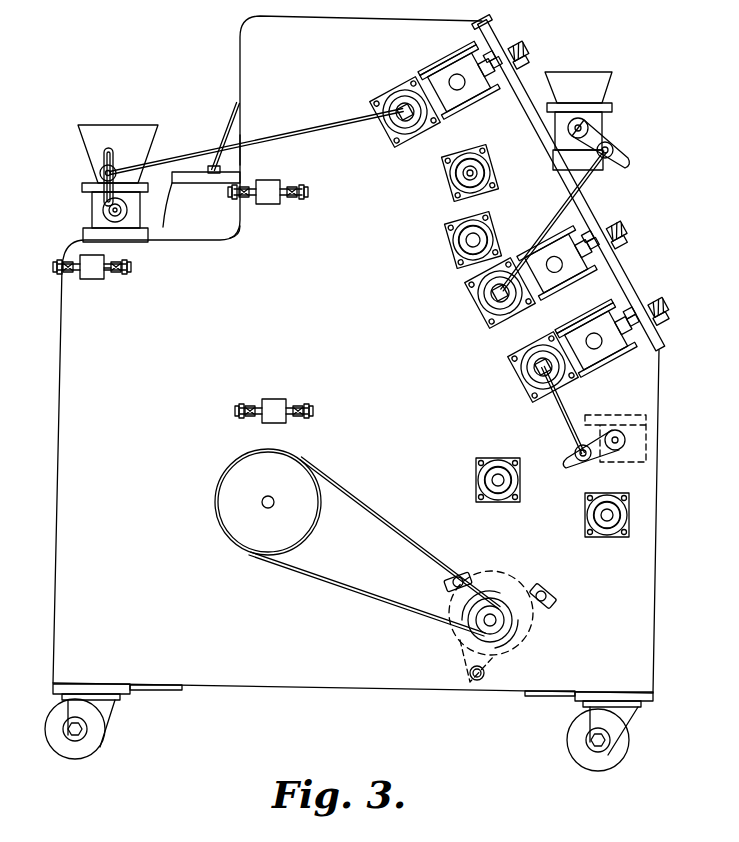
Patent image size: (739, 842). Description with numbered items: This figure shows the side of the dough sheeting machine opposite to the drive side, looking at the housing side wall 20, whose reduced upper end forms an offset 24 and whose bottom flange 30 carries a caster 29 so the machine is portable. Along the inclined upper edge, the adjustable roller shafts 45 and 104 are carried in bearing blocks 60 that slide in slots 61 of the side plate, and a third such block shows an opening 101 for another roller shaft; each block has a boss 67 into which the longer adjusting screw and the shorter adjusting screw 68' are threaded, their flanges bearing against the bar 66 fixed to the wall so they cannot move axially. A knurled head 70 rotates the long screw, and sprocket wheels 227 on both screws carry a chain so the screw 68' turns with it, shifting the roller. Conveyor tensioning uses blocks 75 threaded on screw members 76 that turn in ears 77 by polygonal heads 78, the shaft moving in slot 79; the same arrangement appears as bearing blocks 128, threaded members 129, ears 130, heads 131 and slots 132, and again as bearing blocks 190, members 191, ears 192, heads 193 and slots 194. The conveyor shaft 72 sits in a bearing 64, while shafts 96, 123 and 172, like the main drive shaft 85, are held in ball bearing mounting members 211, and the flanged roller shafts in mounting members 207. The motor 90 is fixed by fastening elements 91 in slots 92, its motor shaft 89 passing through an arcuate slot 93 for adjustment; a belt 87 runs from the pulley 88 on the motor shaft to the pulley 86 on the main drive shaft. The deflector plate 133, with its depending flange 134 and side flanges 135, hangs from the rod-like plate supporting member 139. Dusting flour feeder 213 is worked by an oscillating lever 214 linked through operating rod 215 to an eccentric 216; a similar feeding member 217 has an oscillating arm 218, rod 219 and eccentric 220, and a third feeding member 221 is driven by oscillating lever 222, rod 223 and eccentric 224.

The side wall 20 is at (62, 510).
The offset 24 is at (190, 246).
The caster 29 is at (100, 735).
The bottom flange 30 is at (150, 692).
The shaft 45 is at (443, 78).
The bearing block 60 is at (470, 102).
The slot 61 is at (473, 46).
The bearing 64 is at (490, 162).
The bar 66 is at (615, 298).
The boss 67 is at (480, 72).
The adjusting screw 68' is at (589, 181).
The knurled head 70 is at (518, 50).
The shaft 72 is at (466, 180).
The block 75 is at (268, 181).
The screw-threaded member 76 is at (284, 205).
The ear 77 is at (297, 183).
The polygonal head 78 is at (307, 192).
The slot 79 is at (247, 181).
The main drive shaft 85 is at (276, 502).
The pulley 86 is at (240, 536).
The belt 87 is at (382, 580).
The pulley 88 is at (505, 655).
The motor shaft 89 is at (468, 655).
The motor 90 is at (512, 570).
The fastening element 91 is at (462, 578).
The slot 92 is at (478, 580).
The arcuate slot 93 is at (520, 620).
The shaft 96 is at (492, 482).
The motor shaft opening 101 is at (597, 347).
The shaft 104 is at (548, 258).
The shaft 123 is at (462, 245).
The bearing block 128 is at (96, 280).
The screw-threaded member 129 is at (77, 280).
The ear 130 is at (57, 262).
The head 131 is at (55, 272).
The slot 132 is at (113, 278).
The deflector plate 133 is at (240, 140).
The depending flange 134 is at (174, 209).
The side flange 135 is at (198, 184).
The rod-like plate supporting member 139 is at (232, 108).
The shaft 172 is at (606, 522).
The bearing block 190 is at (276, 399).
The screw-threaded member 191 is at (252, 418).
The ear 192 is at (241, 404).
The head 193 is at (235, 410).
The slot 194 is at (296, 418).
The ball bearing mounting member 207 is at (422, 142).
The ball bearing mounting member 211 is at (497, 172).
The dusting flour feeder 213 is at (92, 205).
The oscillating lever 214 is at (82, 188).
The operating rod 215 is at (185, 150).
The eccentric 216 is at (403, 130).
The dusting flour feeding member 217 is at (603, 122).
The oscillating arm 218 is at (617, 153).
The rod 219 is at (595, 183).
The eccentric 220 is at (495, 296).
The feeding member 221 is at (635, 440).
The oscillating lever 222 is at (565, 468).
The rod 223 is at (563, 418).
The eccentric 224 is at (528, 368).
The sprocket wheel 227 is at (528, 70).